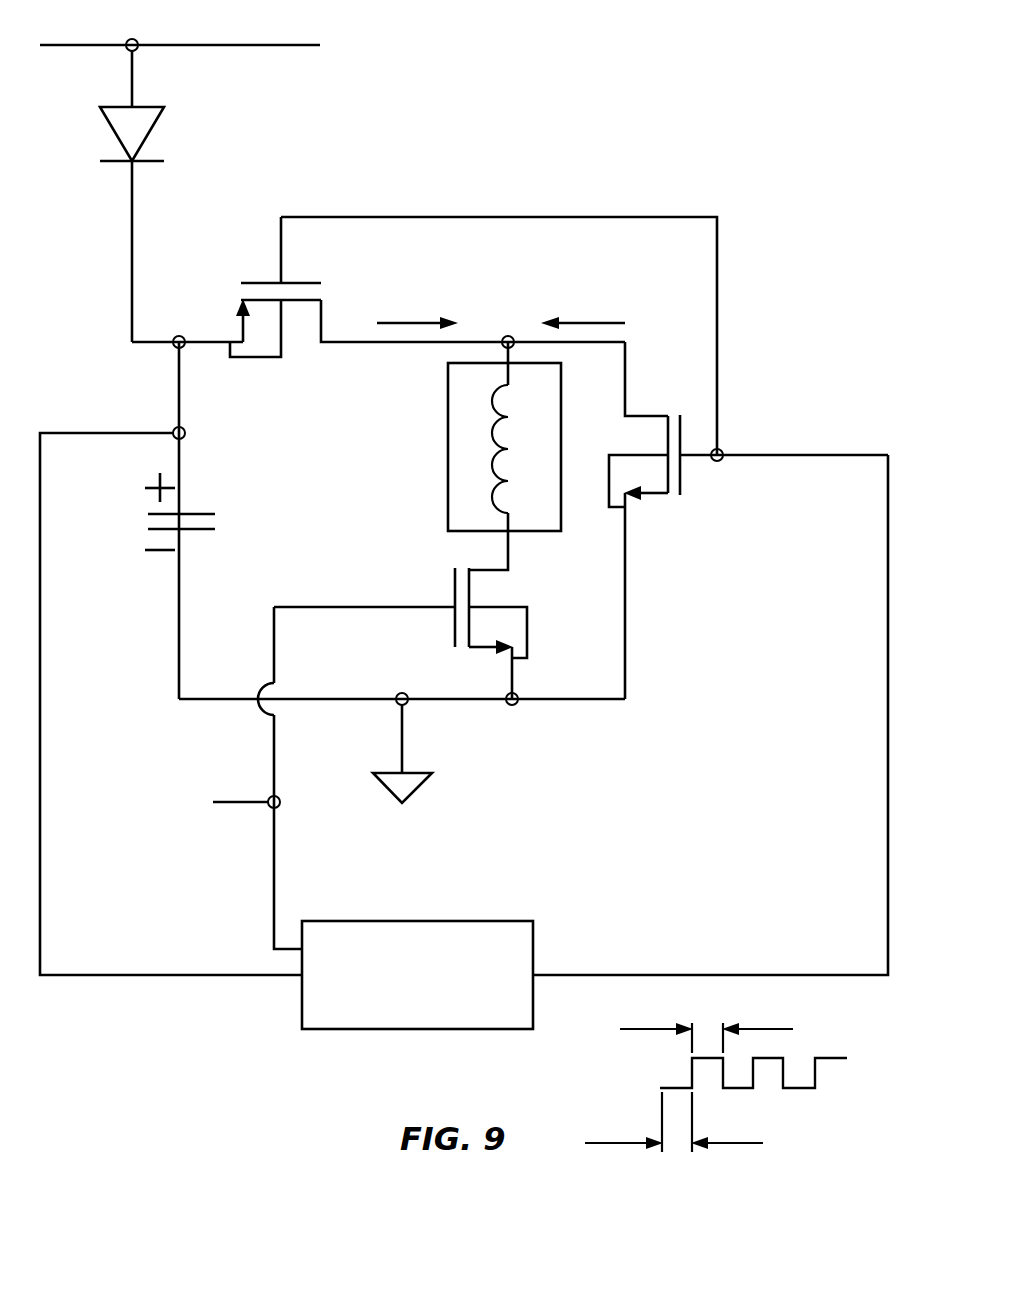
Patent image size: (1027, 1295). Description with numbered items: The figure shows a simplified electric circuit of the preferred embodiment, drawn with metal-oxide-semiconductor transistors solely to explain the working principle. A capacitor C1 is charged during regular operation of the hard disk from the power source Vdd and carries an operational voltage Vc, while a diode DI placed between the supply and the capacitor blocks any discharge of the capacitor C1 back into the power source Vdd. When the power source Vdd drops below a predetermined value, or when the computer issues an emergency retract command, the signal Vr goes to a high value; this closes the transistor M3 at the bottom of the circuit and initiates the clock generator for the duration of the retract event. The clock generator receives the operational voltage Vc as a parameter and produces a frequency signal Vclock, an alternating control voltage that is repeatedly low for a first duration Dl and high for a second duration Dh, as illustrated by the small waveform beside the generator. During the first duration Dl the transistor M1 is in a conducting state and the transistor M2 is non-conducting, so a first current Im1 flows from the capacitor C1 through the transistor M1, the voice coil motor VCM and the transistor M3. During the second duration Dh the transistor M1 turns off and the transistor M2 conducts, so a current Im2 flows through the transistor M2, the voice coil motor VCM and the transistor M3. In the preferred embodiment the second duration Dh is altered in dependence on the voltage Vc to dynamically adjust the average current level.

The power source Vdd is at (180, 30).
The diode DI is at (102, 196).
The transistor M1 is at (424, 336).
The transistor M2 is at (748, 520).
The transistor M3 is at (515, 636).
The voice coil motor VCM is at (459, 456).
The capacitor C1 is at (200, 520).
The operational voltage Vc is at (171, 701).
The signal Vr is at (334, 757).
The first current Im1 is at (417, 308).
The current Im2 is at (583, 308).
The frequency signal Vclock is at (595, 742).
The second duration Dh is at (706, 1024).
The first duration Dl is at (674, 1122).